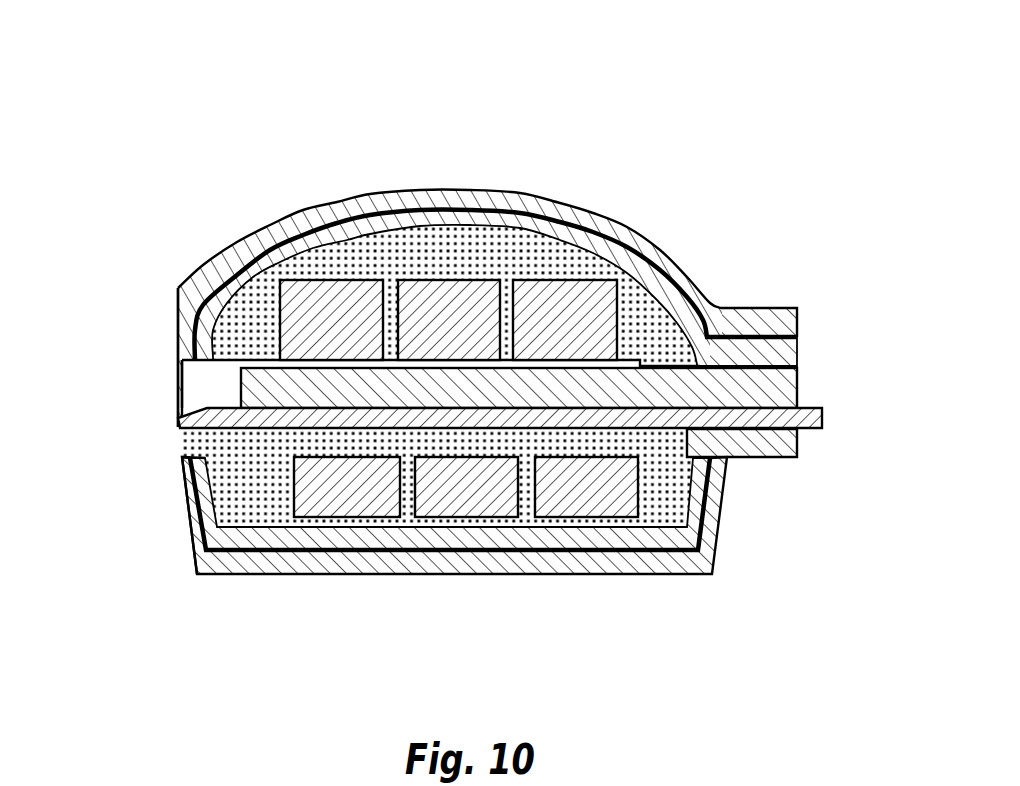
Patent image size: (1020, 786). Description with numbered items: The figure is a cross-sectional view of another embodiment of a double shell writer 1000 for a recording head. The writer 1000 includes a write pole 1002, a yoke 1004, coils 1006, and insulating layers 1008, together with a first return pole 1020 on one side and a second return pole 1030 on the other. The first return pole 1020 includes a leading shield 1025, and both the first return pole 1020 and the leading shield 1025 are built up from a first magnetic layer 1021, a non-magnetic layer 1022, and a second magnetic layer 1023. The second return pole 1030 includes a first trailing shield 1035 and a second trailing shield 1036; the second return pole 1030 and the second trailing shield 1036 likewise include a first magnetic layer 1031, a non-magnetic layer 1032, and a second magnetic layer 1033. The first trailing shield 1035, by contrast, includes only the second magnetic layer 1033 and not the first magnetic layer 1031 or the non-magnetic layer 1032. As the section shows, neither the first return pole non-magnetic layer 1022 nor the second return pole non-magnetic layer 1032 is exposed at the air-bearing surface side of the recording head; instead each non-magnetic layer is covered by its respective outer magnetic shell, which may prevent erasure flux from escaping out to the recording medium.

The double shell writer 1000 is at (699, 103).
The write pole 1002 is at (725, 420).
The yoke 1004 is at (615, 383).
The coils 1006 is at (595, 298).
The insulating layers 1008 is at (557, 265).
The first return pole 1020 is at (394, 580).
The first magnetic layer 1021 is at (237, 540).
The non-magnetic layer 1022 is at (262, 548).
The second magnetic layer 1023 is at (295, 566).
The leading shield 1025 is at (180, 476).
The second return pole 1030 is at (288, 216).
The first magnetic layer 1031 is at (410, 220).
The non-magnetic layer 1032 is at (440, 210).
The second magnetic layer 1033 is at (497, 200).
The first trailing shield 1035 is at (178, 391).
The second trailing shield 1036 is at (178, 341).